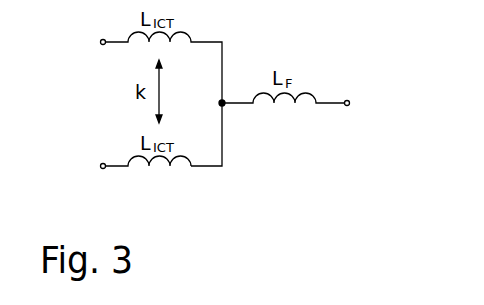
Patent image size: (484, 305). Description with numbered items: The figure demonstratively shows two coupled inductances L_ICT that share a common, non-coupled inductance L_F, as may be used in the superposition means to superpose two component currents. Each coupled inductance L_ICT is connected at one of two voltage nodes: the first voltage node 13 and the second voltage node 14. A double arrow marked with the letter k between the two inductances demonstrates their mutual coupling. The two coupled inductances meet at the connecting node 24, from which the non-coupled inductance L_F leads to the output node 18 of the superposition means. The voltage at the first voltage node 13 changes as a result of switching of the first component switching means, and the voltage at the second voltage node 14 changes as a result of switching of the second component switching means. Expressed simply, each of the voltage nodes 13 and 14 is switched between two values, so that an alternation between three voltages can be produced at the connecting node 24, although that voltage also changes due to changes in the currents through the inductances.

The first voltage node 13 is at (100, 40).
The second voltage node 14 is at (100, 164).
The connecting node 24 is at (223, 101).
The output node 18 is at (349, 100).